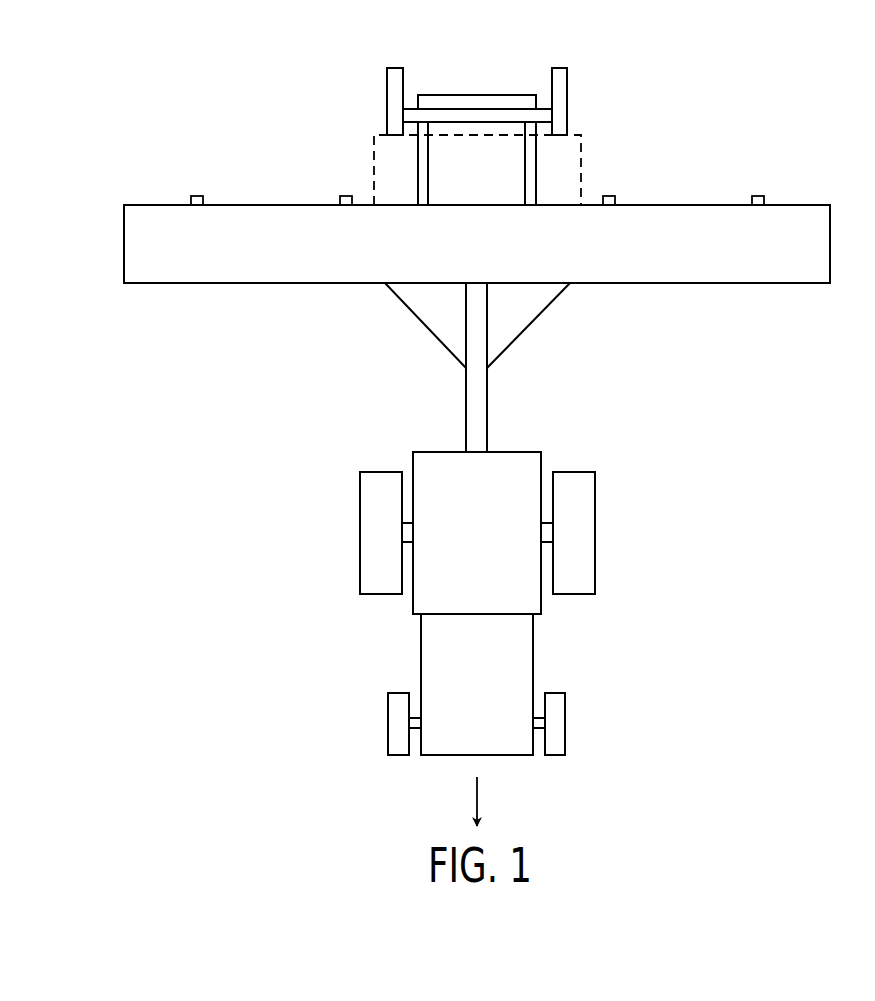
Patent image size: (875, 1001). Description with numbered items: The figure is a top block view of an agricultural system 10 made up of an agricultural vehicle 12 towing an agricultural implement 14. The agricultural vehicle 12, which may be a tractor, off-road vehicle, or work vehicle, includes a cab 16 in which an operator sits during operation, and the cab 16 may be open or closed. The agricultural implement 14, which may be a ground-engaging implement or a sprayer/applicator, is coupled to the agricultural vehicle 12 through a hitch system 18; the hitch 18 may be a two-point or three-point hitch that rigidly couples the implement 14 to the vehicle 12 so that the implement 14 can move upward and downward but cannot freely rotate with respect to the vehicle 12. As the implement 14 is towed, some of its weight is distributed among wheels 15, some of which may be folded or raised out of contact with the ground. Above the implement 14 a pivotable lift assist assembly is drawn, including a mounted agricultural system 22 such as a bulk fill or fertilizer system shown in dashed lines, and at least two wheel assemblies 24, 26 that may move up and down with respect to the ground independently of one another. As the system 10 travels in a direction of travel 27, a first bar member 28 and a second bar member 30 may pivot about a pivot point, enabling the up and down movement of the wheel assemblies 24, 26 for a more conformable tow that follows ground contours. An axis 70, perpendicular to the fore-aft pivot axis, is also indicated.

The agricultural system 10 is at (734, 460).
The agricultural vehicle 12 is at (421, 665).
The agricultural implement 14 is at (145, 255).
The wheels 15 is at (197, 196).
The cab 16 is at (491, 546).
The hitch system 18 is at (476, 370).
The mounted agricultural system 22 is at (581, 150).
The wheel assembly 24 is at (387, 100).
The wheel assembly 26 is at (567, 100).
The direction of travel 27 is at (477, 795).
The first bar member 28 is at (468, 115).
The second bar member 30 is at (447, 101).
The axis 70 is at (481, 77).